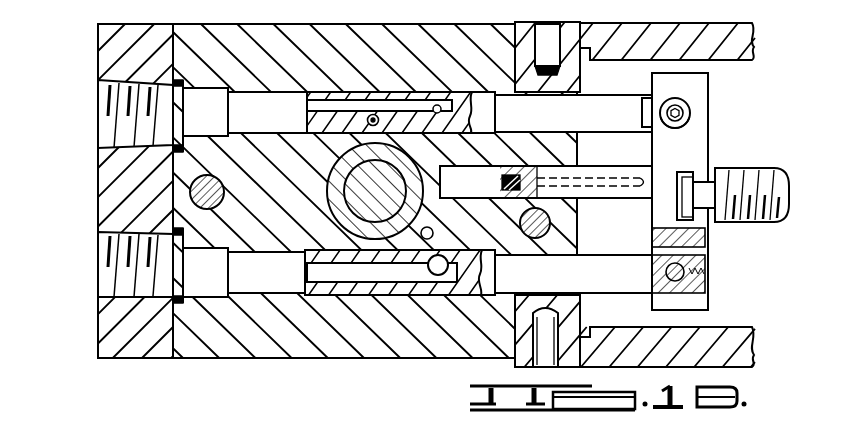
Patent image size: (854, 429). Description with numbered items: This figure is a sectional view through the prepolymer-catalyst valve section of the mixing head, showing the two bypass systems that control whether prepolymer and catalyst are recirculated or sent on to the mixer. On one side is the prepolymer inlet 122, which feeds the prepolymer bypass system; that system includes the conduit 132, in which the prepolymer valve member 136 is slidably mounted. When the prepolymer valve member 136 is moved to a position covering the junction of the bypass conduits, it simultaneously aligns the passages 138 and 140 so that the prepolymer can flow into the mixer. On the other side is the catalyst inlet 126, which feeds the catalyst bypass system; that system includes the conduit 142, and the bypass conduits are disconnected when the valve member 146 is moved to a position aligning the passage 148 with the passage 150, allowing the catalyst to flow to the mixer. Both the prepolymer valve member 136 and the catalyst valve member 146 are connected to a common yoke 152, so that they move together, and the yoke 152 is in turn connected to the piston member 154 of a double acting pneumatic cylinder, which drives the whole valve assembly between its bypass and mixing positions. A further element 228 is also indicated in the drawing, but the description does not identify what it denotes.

The prepolymer inlet 122 is at (104, 267).
The catalyst inlet 126 is at (104, 121).
The conduit 132 is at (282, 278).
The prepolymer valve member 136 is at (318, 300).
The passage 138 is at (440, 276).
The passage 140 is at (378, 268).
The conduit 142 is at (282, 118).
The valve member 146 is at (470, 80).
The passage 148 is at (437, 104).
The passage 150 is at (373, 114).
The common yoke 152 is at (708, 92).
The piston member 154 is at (748, 166).
The pin hole 228 is at (434, 233).